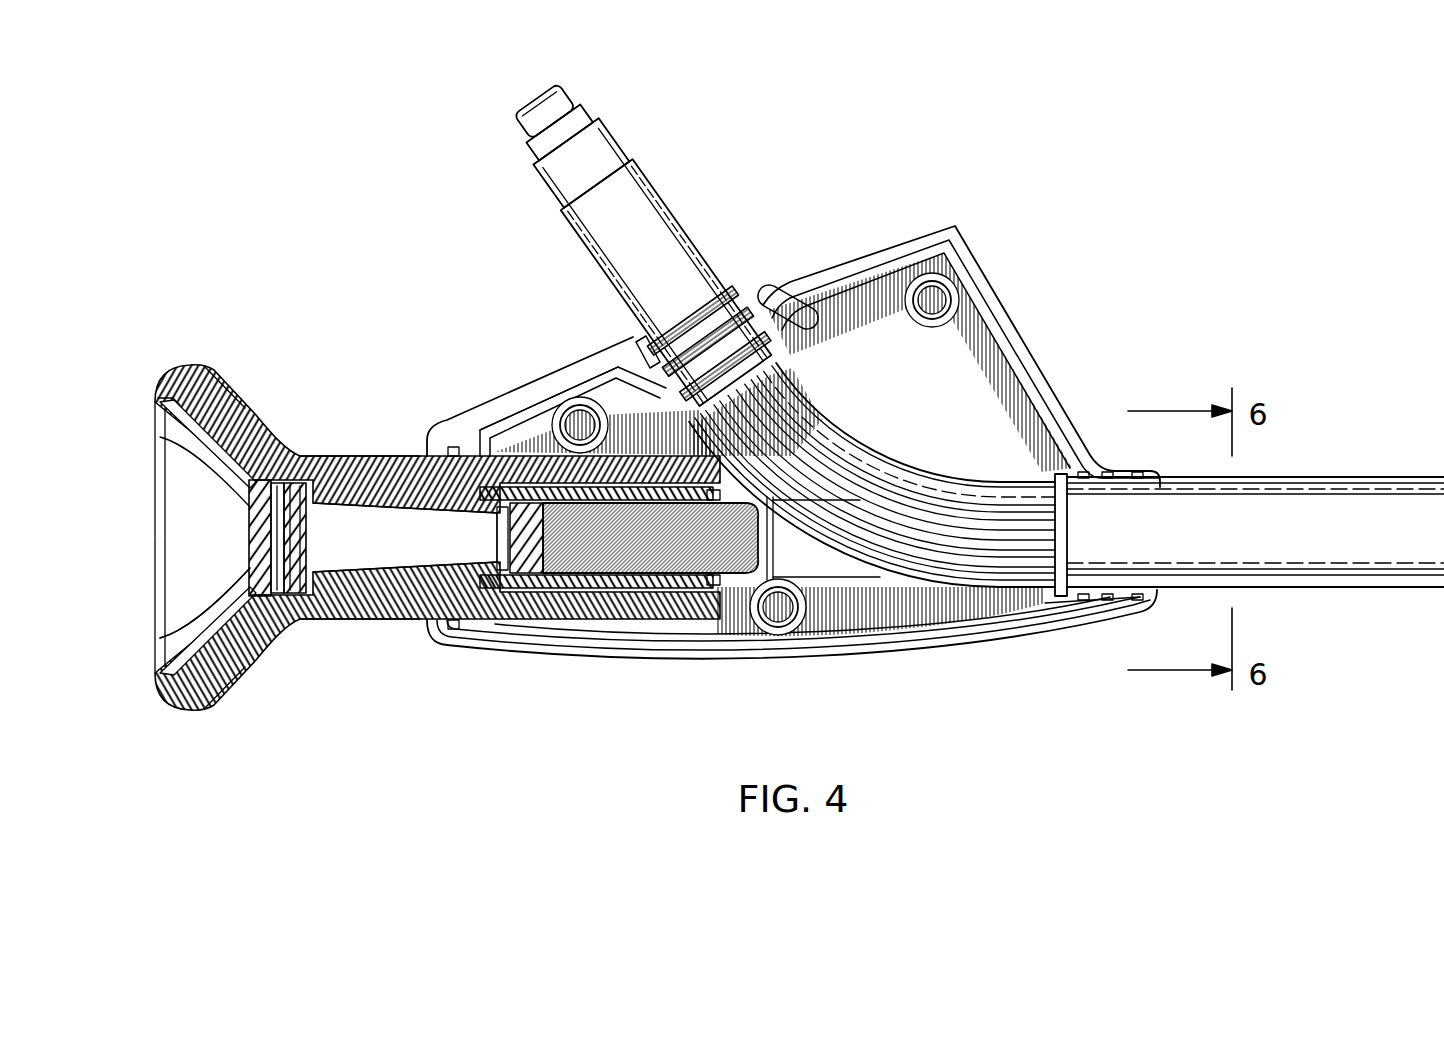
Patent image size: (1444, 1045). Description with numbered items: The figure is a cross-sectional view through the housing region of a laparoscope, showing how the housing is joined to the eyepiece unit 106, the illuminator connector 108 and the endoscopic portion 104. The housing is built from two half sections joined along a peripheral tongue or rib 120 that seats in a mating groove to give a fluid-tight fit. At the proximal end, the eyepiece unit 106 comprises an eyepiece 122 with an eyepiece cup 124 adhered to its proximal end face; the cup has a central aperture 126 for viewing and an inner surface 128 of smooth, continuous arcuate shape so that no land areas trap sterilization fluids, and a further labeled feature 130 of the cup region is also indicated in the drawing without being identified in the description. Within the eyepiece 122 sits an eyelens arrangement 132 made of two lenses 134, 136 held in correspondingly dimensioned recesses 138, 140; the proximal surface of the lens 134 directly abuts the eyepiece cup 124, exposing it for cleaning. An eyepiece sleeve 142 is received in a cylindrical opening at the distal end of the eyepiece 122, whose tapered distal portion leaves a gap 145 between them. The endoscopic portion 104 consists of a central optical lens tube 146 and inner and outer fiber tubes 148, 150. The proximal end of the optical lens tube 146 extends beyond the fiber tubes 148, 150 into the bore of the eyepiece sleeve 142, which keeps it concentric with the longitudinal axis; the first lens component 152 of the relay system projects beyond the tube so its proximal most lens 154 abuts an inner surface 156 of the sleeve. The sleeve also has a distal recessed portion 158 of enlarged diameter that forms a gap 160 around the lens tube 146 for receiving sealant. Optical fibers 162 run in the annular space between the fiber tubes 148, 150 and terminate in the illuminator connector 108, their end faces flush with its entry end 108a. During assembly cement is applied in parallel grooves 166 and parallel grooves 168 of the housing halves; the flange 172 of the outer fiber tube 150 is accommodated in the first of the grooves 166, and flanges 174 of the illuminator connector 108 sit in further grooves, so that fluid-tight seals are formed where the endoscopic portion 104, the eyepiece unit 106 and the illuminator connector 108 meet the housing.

The endoscopic portion 104 is at (1340, 443).
The eyepiece unit 106 is at (358, 352).
The illuminator connector 108 is at (695, 232).
The entry end 108a is at (535, 97).
The tongue or rib 120 is at (990, 318).
The eyepiece 122 is at (373, 623).
The eyepiece cup 124 is at (150, 402).
The central aperture 126 is at (247, 660).
The inner surface 128 is at (193, 617).
The upper wall 130 is at (235, 400).
The eyelens arrangement 132 is at (287, 480).
The lens 134 is at (257, 540).
The lens 136 is at (313, 627).
The recess 138 is at (263, 640).
The recess 140 is at (330, 460).
The eyepiece sleeve 142 is at (633, 595).
The gap 145 is at (717, 625).
The optical lens tube 146 is at (693, 565).
The inner fiber tube 148 is at (818, 565).
The outer fiber tube 150 is at (1380, 547).
The first lens component 152 is at (557, 620).
The proximal most lens 154 is at (520, 450).
The inner surface 156 is at (503, 627).
The distal recessed portion 158 is at (600, 420).
The gap 160 is at (733, 600).
The optical fibers 162 is at (1000, 572).
The parallel grooves 166 is at (1105, 470).
The parallel grooves 168 is at (452, 447).
The flange 172 is at (1060, 600).
The flanges 174 is at (648, 318).